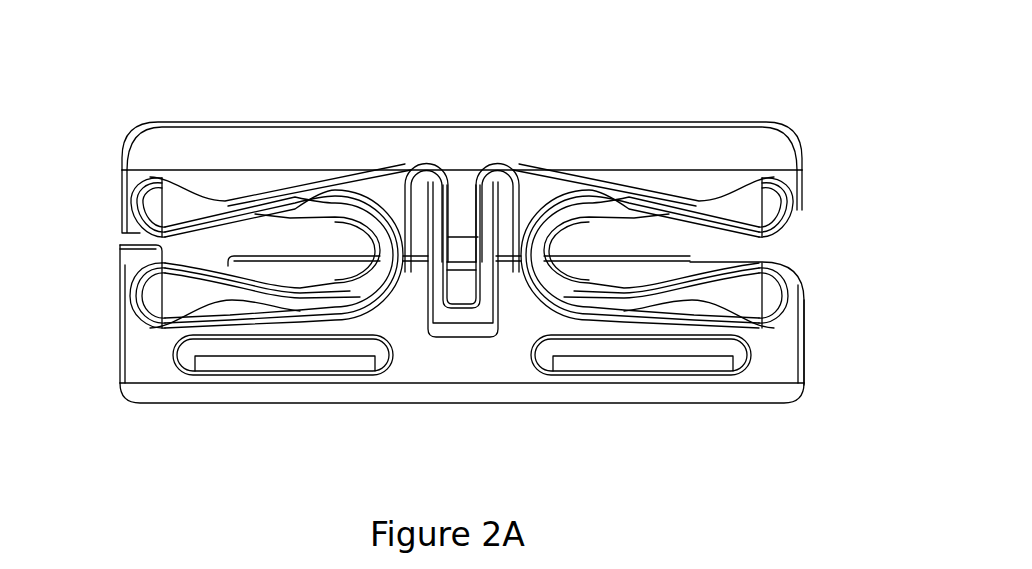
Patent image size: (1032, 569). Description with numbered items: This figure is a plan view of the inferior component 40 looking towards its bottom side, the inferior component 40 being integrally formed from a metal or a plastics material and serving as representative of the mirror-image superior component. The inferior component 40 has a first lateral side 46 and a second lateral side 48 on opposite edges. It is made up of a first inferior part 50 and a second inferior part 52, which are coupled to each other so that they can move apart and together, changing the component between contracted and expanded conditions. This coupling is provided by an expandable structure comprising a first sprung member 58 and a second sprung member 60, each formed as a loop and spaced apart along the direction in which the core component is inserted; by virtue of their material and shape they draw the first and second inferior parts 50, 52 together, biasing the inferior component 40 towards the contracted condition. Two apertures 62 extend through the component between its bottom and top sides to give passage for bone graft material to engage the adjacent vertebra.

The inferior component 40 is at (765, 105).
The first lateral side 46 is at (805, 343).
The second lateral side 48 is at (118, 335).
The first inferior part 50 is at (462, 360).
The second inferior part 52 is at (478, 145).
The first sprung member 58 is at (323, 200).
The second sprung member 60 is at (612, 190).
The apertures 62 is at (272, 358).